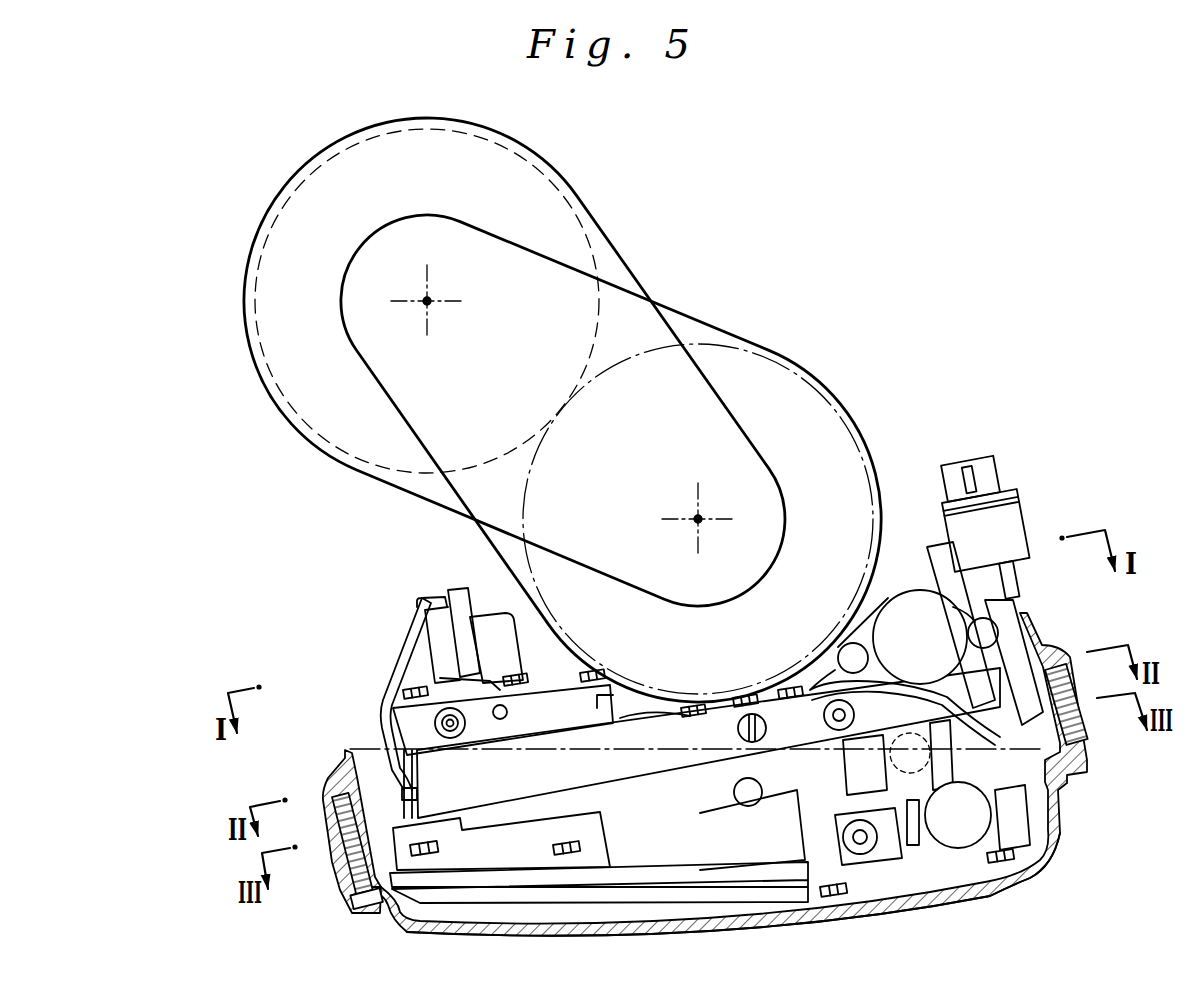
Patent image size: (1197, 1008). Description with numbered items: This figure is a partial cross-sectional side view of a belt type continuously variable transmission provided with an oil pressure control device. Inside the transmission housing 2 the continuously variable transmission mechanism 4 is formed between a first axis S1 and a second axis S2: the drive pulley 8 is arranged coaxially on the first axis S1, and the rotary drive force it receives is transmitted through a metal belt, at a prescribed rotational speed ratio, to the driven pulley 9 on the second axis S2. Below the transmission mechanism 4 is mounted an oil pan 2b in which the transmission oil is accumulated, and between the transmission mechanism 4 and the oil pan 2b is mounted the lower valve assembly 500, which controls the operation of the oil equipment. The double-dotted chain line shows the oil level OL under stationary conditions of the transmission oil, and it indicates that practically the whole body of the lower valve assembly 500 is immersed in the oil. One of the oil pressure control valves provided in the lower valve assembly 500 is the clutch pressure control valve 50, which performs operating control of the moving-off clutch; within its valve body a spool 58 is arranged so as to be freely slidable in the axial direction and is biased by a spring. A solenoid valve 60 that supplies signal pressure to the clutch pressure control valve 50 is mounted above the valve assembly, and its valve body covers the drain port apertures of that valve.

The driven pulley 9 is at (575, 197).
The drive pulley 8 is at (830, 397).
The belt type continuously variable transmission mechanism 4 is at (761, 287).
The first axis S1 is at (701, 520).
The second axis S2 is at (429, 302).
The transmission housing 2 is at (1030, 617).
The oil pan 2b is at (1058, 882).
The lower valve assembly 500 is at (384, 651).
The oil level OL is at (376, 748).
The solenoid valve 60 is at (900, 604).
The spool 58 is at (908, 753).
The clutch pressure control valve 50 is at (948, 833).